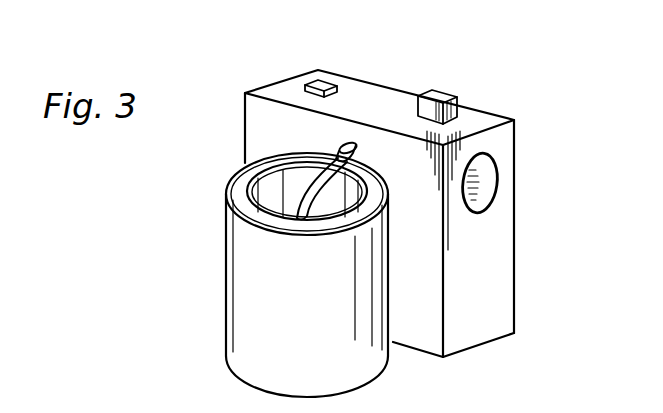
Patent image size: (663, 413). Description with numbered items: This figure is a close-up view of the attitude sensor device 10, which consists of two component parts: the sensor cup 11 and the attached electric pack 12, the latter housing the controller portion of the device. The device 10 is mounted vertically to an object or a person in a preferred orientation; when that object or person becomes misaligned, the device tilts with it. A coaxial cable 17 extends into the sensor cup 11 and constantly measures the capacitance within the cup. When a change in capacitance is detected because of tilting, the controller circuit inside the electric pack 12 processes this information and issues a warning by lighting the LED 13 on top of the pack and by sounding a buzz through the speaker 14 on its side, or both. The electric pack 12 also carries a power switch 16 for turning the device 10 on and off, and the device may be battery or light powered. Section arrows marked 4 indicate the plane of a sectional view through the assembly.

The section line 4- 4 is at (386, 166).
The attitude sensor device 10 is at (370, 216).
The sensor cup 11 is at (233, 334).
The electric pack 12 is at (507, 283).
The LED 13 is at (446, 93).
The speaker 14 is at (494, 174).
The power switch 16 is at (323, 83).
The coaxial cable 17 is at (326, 147).